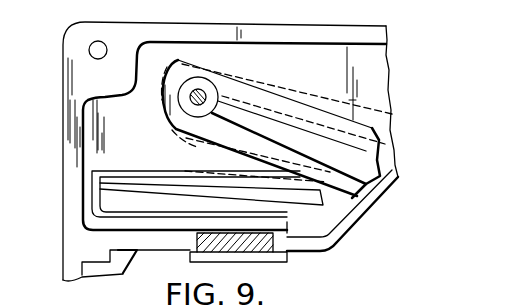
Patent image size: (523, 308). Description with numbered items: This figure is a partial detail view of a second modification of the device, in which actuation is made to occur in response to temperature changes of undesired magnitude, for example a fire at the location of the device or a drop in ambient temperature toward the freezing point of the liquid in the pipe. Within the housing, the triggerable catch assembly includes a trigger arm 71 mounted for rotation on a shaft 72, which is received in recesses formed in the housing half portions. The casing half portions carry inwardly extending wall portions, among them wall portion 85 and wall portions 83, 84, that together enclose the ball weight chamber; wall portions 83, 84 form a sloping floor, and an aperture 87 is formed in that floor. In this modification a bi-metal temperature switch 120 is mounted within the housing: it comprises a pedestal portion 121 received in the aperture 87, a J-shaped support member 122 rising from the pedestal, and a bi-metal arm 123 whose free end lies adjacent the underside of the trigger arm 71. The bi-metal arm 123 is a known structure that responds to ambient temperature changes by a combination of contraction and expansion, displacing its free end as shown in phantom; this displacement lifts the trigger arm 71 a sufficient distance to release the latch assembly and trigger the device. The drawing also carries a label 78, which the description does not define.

The trigger arm 71 is at (255, 84).
The shaft 72 is at (196, 97).
The alternate lever position 78 is at (342, 158).
The wall portion 83 is at (307, 249).
The wall portion 84 is at (172, 246).
The wall portion 85 is at (72, 132).
The aperture 87 is at (278, 258).
The bi-metal temperature switch 120 is at (83, 188).
The pedestal portion 121 is at (227, 233).
The J-shaped support member 122 is at (90, 216).
The bi-metal arm 123 is at (133, 185).